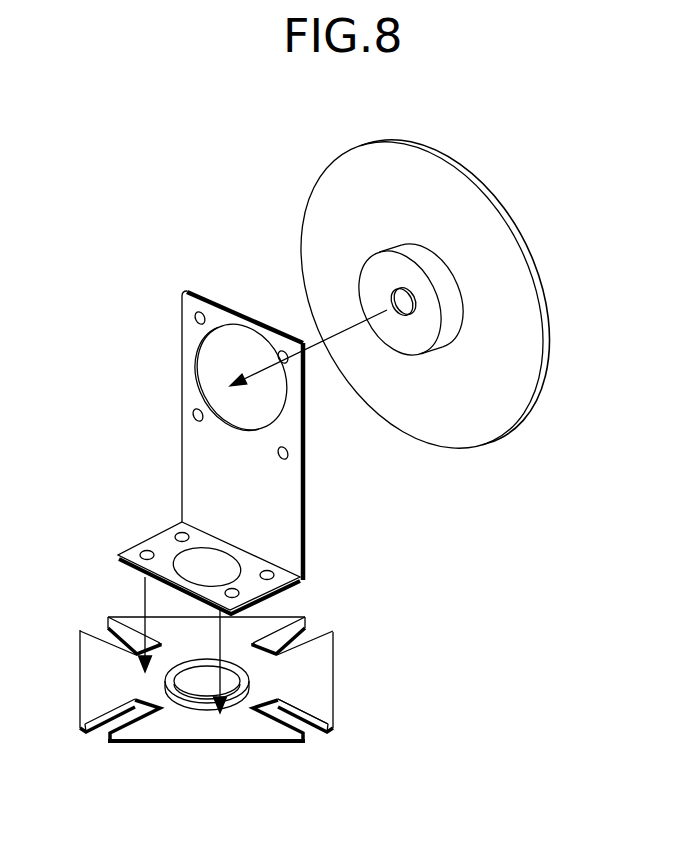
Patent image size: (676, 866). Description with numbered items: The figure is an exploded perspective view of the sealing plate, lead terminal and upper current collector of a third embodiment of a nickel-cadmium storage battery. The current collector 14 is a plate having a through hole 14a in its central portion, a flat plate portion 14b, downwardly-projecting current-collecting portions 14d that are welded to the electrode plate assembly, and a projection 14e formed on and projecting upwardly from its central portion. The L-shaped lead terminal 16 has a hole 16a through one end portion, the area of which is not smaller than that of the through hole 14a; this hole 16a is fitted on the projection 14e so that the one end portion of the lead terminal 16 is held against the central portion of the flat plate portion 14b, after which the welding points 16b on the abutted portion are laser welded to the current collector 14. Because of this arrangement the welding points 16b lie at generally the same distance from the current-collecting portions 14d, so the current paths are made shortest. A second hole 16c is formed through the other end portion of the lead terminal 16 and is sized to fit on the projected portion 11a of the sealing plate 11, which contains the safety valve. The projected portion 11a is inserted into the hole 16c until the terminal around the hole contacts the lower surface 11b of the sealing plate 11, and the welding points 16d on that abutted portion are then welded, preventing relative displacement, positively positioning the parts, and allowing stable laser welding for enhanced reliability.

The sealing plate 11 is at (414, 175).
The projected portion 11a is at (425, 297).
The lower surface 11b is at (459, 413).
The current collector 14 is at (324, 651).
The through hole 14a is at (234, 682).
The flat plate portion 14b is at (237, 715).
The current-collecting portions 14d is at (327, 727).
The projection 14e is at (196, 705).
The lead terminal 16 is at (288, 478).
The hole 16a is at (220, 556).
The welding points 16b is at (182, 535).
The hole 16c is at (225, 348).
The welding points 16d is at (282, 350).